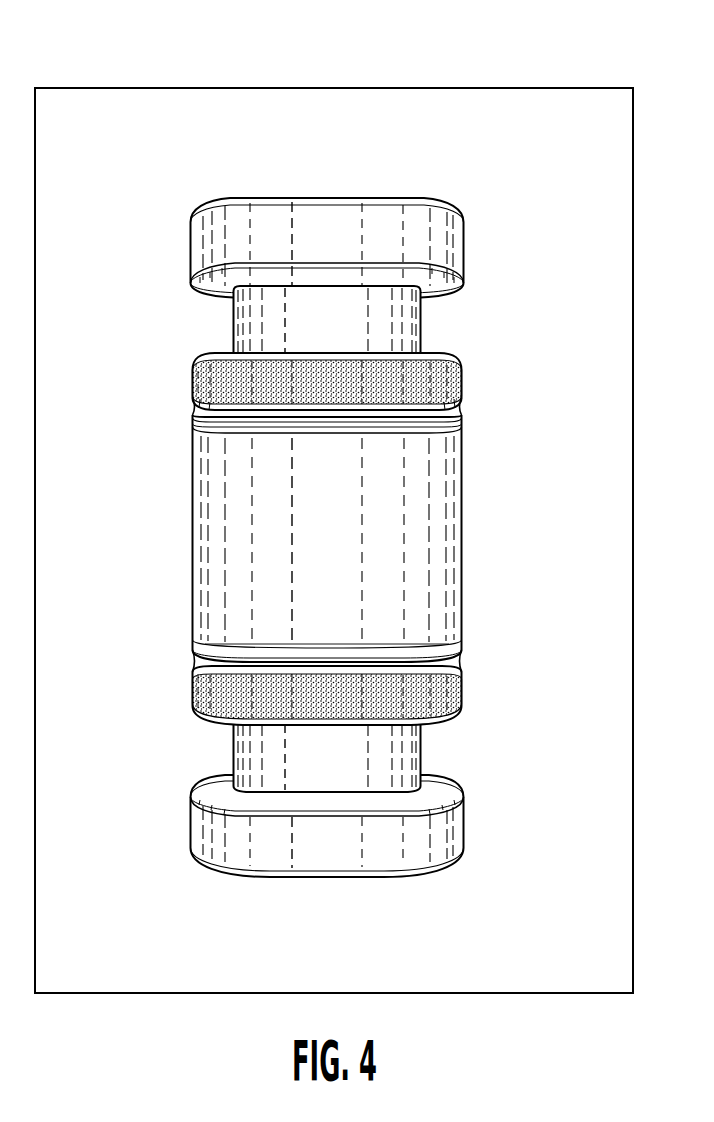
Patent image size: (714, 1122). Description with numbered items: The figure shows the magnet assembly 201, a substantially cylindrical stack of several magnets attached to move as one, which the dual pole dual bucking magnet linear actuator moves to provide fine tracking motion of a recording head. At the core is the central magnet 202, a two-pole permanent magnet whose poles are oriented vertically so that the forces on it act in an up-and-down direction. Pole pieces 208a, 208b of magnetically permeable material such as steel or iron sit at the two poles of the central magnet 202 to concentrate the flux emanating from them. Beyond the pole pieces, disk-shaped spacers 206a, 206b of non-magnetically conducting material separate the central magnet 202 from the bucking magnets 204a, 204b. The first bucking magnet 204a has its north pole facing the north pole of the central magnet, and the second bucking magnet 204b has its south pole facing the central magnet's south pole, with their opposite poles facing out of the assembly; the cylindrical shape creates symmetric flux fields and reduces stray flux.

The magnet assembly 201 is at (285, 143).
The central magnet 202 is at (466, 549).
The first bucking magnet 204a is at (467, 257).
The second bucking magnet 204b is at (190, 822).
The spacer 206a is at (428, 330).
The spacer 206b is at (231, 752).
The pole piece 208a is at (188, 388).
The pole piece 208b is at (466, 691).